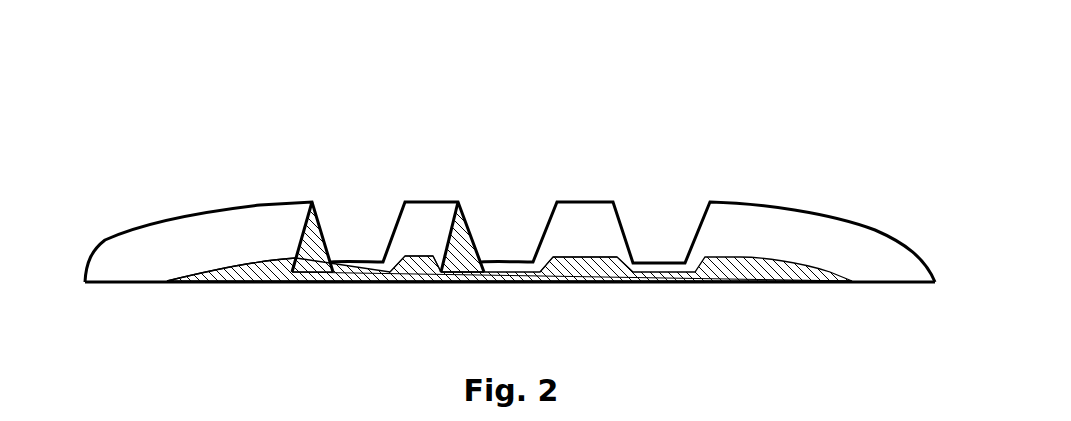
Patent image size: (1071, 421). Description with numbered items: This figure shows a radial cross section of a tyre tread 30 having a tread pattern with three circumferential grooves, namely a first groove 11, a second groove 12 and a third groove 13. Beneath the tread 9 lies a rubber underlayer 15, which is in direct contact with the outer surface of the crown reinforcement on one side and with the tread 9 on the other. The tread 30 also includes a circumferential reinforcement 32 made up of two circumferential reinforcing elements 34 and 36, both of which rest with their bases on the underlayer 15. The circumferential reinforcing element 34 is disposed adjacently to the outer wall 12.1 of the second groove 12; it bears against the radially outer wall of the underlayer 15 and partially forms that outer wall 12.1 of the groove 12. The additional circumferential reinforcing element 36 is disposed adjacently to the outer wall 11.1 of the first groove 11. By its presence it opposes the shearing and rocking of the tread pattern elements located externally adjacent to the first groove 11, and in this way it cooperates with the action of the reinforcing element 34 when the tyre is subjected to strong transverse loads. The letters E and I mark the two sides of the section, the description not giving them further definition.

The tread 9 is at (775, 225).
The rubber underlayer 15 is at (753, 273).
The first groove 11 is at (349, 232).
The outer wall of the first groove 11.1 is at (323, 230).
The additional circumferential reinforcing element 36 is at (316, 268).
The second groove 12 is at (497, 237).
The circumferential reinforcing element 34 is at (467, 250).
The outer wall of the second groove 12.1 is at (483, 258).
The third groove 13 is at (664, 232).
The circumferential reinforcement 32 is at (439, 306).
The tread 30 is at (357, 119).
The exterior side E is at (134, 206).
The interior side I is at (898, 206).